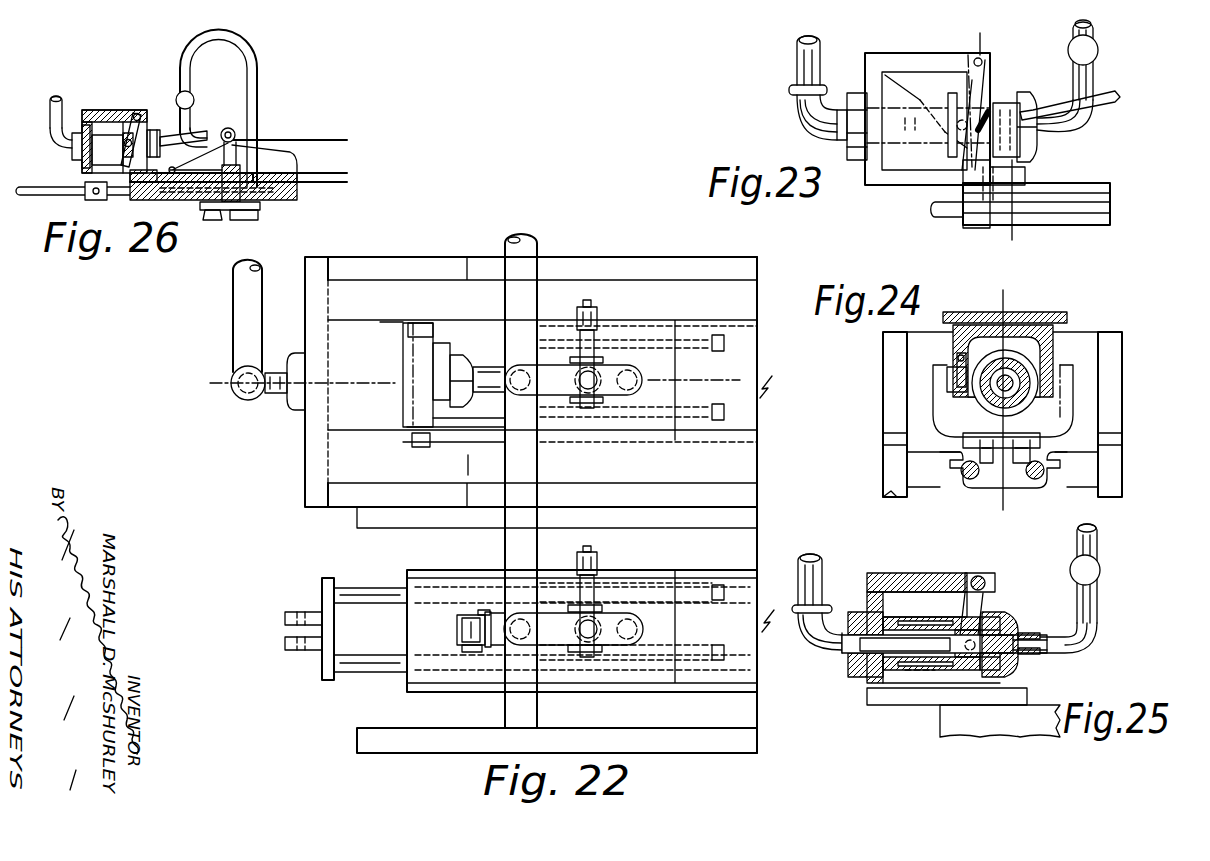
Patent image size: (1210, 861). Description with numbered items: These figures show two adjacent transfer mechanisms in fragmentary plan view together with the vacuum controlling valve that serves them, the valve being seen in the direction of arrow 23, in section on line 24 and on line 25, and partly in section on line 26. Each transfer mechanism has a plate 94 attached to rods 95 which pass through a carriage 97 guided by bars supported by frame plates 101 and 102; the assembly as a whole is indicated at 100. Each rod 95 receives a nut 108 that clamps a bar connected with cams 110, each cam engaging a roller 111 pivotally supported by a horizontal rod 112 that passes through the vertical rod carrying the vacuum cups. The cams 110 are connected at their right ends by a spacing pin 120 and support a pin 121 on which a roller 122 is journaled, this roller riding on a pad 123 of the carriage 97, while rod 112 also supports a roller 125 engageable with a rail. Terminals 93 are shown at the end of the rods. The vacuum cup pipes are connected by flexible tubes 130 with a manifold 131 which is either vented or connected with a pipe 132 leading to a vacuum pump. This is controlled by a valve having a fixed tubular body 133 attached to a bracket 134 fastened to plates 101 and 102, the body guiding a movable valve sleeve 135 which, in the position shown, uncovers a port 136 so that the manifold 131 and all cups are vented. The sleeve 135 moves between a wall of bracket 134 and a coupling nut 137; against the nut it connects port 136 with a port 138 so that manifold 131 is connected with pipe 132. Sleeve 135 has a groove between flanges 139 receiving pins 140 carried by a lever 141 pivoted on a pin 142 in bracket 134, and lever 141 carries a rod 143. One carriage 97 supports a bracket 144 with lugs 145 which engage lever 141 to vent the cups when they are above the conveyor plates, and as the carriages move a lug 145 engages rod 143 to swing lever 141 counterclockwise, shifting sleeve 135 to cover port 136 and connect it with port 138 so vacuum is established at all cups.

In FIG. 22, the electrical connector terminals 93 is at (287, 628).
In FIG. 22, the plate 94 is at (343, 569).
In FIG. 22, the rods 95 is at (373, 655).
In FIG. 23, the carriage 97 is at (1083, 225).
In FIG. 22, the drive unit assembly 100 is at (483, 725).
In FIG. 22, the frame plate 101 is at (462, 528).
In FIG. 22, the frame plate 102 is at (437, 751).
In FIG. 22, the nut 108 is at (716, 604).
In FIG. 22, the cams 110 is at (640, 383).
In FIG. 22, the roller 111 is at (592, 368).
In FIG. 22, the horizontal rod 112 is at (592, 305).
In FIG. 22, the spacing pin 120 is at (500, 648).
In FIG. 22, the pin 121 is at (466, 650).
In FIG. 22, the roller 122 is at (457, 633).
In FIG. 22, the pad 123 is at (457, 615).
In FIG. 22, the roller 125 is at (577, 312).
In FIG. 26, the flexible tubes 130 is at (257, 70).
In FIG. 23, the flexible tubes 130 is at (1093, 30).
In FIG. 25, the flexible tubes 130 is at (1098, 530).
In FIG. 22, the manifold 131 is at (538, 243).
In FIG. 26, the manifold 131 is at (194, 100).
In FIG. 23, the manifold 131 is at (1098, 50).
In FIG. 25, the manifold 131 is at (1100, 570).
In FIG. 22, the pipe 132 is at (232, 296).
In FIG. 26, the pipe 132 is at (62, 101).
In FIG. 23, the pipe 132 is at (797, 72).
In FIG. 25, the pipe 132 is at (823, 572).
In FIG. 26, the fixed tubular body 133 is at (72, 160).
In FIG. 23, the fixed tubular body 133 is at (852, 126).
In FIG. 25, the fixed tubular body 133 is at (842, 660).
In FIG. 26, the bracket 134 is at (115, 110).
In FIG. 23, the bracket 134 is at (917, 56).
In FIG. 25, the bracket 134 is at (920, 573).
In FIG. 26, the movable valve sleeve 135 is at (114, 124).
In FIG. 23, the movable valve sleeve 135 is at (945, 100).
In FIG. 25, the movable valve sleeve 135 is at (930, 617).
In FIG. 25, the port 136 is at (985, 640).
In FIG. 22, the coupling nut 137 is at (455, 362).
In FIG. 26, the coupling nut 137 is at (152, 135).
In FIG. 23, the coupling nut 137 is at (1020, 100).
In FIG. 25, the coupling nut 137 is at (1018, 616).
In FIG. 25, the port 138 is at (930, 665).
In FIG. 25, the flanges 139 is at (975, 683).
In FIG. 24, the pins 140 is at (978, 409).
In FIG. 24, the lever 141 is at (1048, 312).
In FIG. 24, the pin 142 is at (1068, 322).
In FIG. 22, the rod 143 is at (498, 404).
In FIG. 26, the rod 143 is at (200, 134).
In FIG. 23, the rod 143 is at (1113, 95).
In FIG. 24, the rod 143 is at (957, 378).
In FIG. 24, the bracket 144 is at (933, 392).
In FIG. 24, the lugs 145 is at (956, 364).
In FIG. 22, the arrow 23 is at (464, 456).
In FIG. 23, the section line 24 is at (985, 29).
In FIG. 24, the section line 25 is at (1003, 290).
In FIG. 22, the section line 26 is at (210, 383).